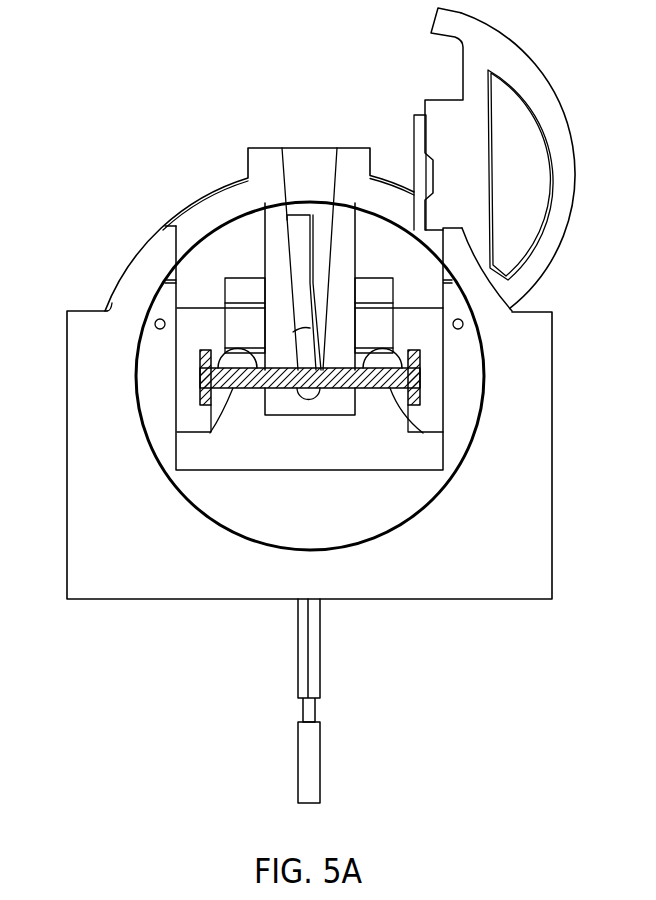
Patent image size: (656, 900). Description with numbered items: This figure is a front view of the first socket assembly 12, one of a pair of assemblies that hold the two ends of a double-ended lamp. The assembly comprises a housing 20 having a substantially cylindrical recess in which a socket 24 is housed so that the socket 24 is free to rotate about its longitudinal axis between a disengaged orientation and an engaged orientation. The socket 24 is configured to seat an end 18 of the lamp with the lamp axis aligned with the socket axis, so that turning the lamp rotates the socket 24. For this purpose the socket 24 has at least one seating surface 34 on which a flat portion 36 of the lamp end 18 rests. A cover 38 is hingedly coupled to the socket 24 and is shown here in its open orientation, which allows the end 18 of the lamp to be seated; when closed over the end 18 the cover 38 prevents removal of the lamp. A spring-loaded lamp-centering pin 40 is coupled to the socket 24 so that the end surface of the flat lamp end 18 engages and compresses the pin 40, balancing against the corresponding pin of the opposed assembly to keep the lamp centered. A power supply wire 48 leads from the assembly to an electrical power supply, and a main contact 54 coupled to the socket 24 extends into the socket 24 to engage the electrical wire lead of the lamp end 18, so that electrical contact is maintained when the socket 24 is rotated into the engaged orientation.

The first socket assembly 12 is at (110, 92).
The end 18 is at (418, 380).
The housing 20 is at (155, 267).
The socket 24 is at (223, 240).
The seating surface 34 is at (237, 390).
The flat portion 36 is at (337, 390).
The cover 38 is at (510, 100).
The spring-loaded lamp-centering pin 40 is at (233, 362).
The power supply wire 48 is at (300, 763).
The main contact 54 is at (312, 240).